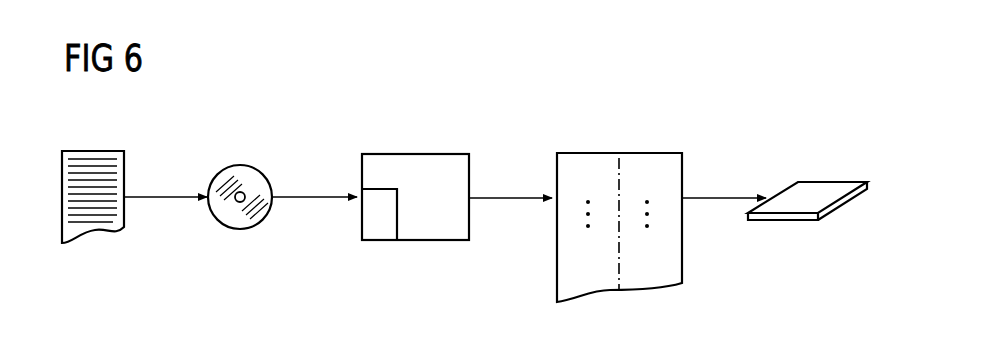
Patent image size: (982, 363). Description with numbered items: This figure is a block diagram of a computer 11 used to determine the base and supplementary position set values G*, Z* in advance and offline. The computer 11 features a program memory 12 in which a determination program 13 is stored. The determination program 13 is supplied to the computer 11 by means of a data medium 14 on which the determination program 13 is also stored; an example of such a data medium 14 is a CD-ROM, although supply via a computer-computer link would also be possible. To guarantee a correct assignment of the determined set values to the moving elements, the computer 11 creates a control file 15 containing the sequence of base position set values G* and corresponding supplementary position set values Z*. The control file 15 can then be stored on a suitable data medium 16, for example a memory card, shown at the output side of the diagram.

The computer 11 is at (415, 154).
The program memory 12 is at (381, 232).
The determination program 13 is at (90, 150).
The data medium 14 is at (240, 165).
The control file 15 is at (618, 153).
The data medium 16 is at (822, 182).